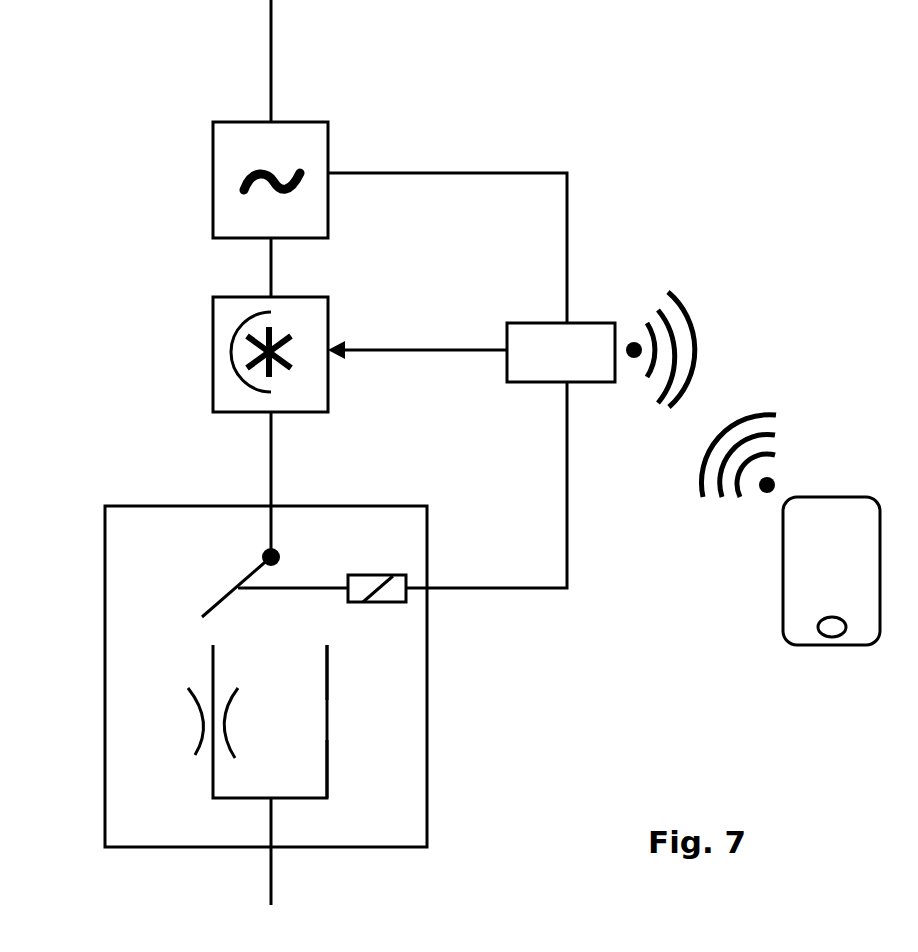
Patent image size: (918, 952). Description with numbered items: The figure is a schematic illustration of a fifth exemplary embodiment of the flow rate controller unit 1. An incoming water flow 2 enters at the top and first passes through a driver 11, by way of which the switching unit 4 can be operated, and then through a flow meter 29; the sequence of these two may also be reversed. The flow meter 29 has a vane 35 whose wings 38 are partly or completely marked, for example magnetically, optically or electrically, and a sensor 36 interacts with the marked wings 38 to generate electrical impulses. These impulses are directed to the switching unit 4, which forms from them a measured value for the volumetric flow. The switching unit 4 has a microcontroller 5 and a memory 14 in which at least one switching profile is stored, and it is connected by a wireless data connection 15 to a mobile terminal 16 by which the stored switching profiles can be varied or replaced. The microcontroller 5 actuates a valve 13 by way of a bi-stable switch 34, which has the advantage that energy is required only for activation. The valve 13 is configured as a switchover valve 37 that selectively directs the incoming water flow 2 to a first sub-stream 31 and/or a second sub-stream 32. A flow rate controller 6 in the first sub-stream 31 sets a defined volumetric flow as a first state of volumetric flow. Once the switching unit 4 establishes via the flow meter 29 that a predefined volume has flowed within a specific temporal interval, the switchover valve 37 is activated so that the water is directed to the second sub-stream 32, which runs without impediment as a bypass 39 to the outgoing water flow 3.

The flow rate controller unit 1 is at (166, 146).
The incoming water flow 2 is at (269, 60).
The outgoing water flow 3 is at (271, 878).
The switching unit 4 is at (577, 324).
The microcontroller 5 is at (522, 320).
The flow rate controller 6 is at (198, 748).
The driver 11 is at (233, 222).
The valve 13 is at (220, 577).
The memory 14 is at (596, 330).
The wireless data connection 15 is at (662, 380).
The mobile terminal 16 is at (803, 618).
The flow meter 29 is at (218, 323).
The first sub-stream 31 is at (212, 667).
The second sub-stream 32 is at (327, 686).
The bi-stable switch 34 is at (392, 596).
The vane 35 is at (253, 350).
The sensor 36 is at (340, 360).
The switchover valve 37 is at (243, 578).
The wing 38 is at (253, 358).
The bypass 39 is at (327, 758).